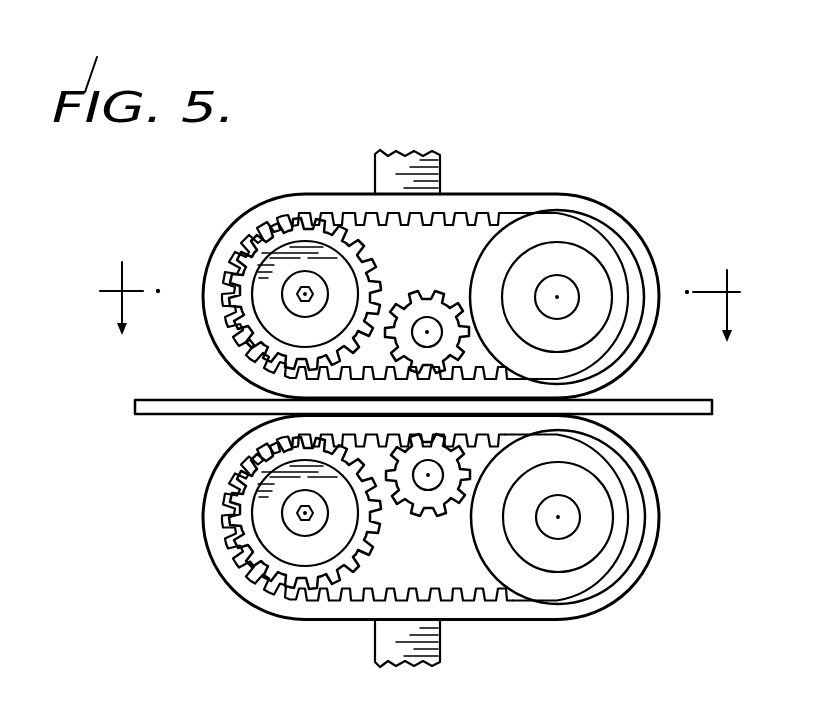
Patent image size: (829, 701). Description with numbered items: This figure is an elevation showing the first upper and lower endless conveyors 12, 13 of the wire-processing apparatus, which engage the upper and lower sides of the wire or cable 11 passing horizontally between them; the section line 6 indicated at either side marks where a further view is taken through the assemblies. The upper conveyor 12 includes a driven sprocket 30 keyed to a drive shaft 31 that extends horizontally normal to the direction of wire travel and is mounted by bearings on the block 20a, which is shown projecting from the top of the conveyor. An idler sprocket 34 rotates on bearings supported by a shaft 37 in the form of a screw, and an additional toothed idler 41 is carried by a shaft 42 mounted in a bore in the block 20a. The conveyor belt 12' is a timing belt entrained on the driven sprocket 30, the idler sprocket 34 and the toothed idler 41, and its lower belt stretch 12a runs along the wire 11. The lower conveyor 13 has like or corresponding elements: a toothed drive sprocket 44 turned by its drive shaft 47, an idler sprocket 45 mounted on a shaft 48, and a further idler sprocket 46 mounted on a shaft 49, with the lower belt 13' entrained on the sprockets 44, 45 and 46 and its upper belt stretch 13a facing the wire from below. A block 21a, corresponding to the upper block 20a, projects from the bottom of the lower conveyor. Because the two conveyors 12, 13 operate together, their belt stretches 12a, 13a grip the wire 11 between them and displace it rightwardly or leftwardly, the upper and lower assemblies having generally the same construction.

The section line 6- 6 is at (422, 299).
The wire or cable 11 is at (150, 398).
The first upper endless conveyor 12 is at (388, 276).
The conveyor belt 12' is at (569, 257).
The belt stretch 12a is at (450, 388).
The first lower endless conveyor 13 is at (359, 525).
The lower belt 13' is at (426, 561).
The belt stretch 13a is at (367, 506).
The block 20a is at (455, 233).
The block 21a is at (433, 578).
The driven sprocket 30 is at (625, 343).
The drive shaft 31 is at (570, 290).
The idler sprocket 34 is at (243, 277).
The shaft 37 is at (298, 300).
The toothed idler 41 is at (403, 302).
The shaft 42 is at (443, 302).
The toothed drive sprocket 44 is at (625, 547).
The idler sprocket 45 is at (233, 500).
The idler sprocket 46 is at (448, 503).
The drive shaft 47 is at (567, 512).
The shaft 48 is at (290, 517).
The shaft 49 is at (425, 479).